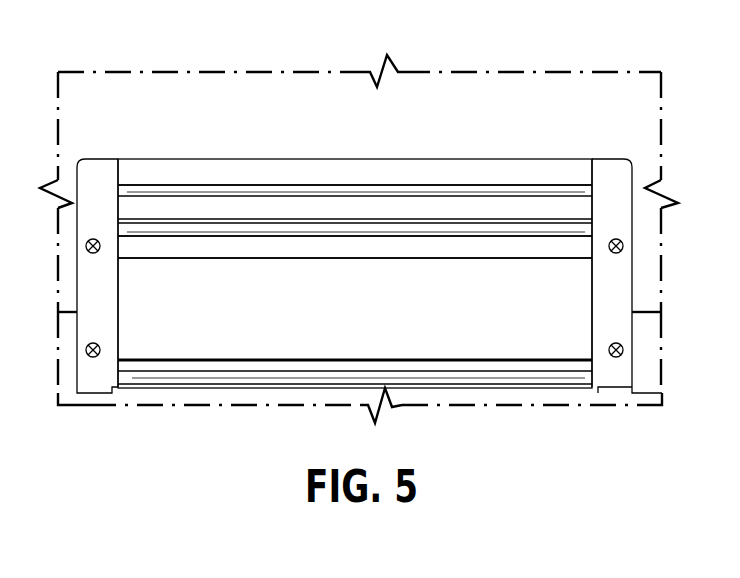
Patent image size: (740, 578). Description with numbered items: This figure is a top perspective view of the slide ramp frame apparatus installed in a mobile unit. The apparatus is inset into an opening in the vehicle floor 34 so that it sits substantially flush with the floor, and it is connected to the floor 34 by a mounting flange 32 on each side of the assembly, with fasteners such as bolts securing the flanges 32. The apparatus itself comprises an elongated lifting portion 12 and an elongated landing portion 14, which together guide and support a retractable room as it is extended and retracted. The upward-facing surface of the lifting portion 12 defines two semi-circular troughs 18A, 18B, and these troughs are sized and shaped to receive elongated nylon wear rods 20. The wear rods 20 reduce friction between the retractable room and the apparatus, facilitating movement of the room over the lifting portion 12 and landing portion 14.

The lifting portion 12 is at (488, 207).
The landing portion 14 is at (365, 310).
The semi-circular trough 18A is at (180, 187).
The semi-circular trough 18B is at (163, 232).
The nylon wear rod 20 is at (527, 232).
The mounting flange 32 is at (112, 292).
The vehicle floor 34 is at (350, 126).